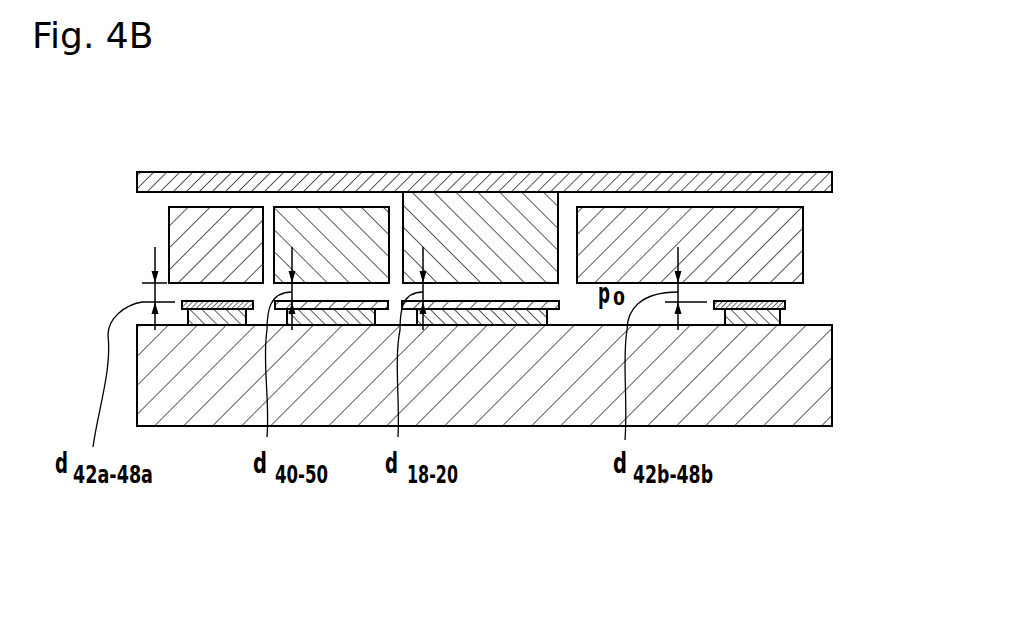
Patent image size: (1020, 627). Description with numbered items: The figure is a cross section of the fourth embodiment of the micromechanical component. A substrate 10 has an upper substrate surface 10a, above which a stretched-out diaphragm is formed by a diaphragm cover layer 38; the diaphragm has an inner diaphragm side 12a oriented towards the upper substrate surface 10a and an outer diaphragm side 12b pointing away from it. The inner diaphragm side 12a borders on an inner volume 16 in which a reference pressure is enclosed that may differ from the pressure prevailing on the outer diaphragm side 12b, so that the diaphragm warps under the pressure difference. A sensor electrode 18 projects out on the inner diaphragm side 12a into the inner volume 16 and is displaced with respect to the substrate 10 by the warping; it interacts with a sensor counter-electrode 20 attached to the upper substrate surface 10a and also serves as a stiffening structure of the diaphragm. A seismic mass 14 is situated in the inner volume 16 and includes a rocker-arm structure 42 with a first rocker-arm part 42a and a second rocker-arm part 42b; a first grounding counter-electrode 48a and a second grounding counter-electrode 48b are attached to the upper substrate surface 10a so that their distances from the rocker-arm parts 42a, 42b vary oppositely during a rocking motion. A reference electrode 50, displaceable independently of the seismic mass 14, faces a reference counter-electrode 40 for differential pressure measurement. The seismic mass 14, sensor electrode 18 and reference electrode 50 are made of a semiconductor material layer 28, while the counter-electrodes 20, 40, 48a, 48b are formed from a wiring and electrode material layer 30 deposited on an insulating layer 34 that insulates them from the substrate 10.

The substrate 10 is at (800, 382).
The upper substrate surface 10a is at (606, 311).
The inner diaphragm side 12a is at (808, 204).
The outer diaphragm side 12b is at (755, 166).
The seismic mass 14 is at (743, 240).
The inner volume 16 is at (568, 218).
The sensor electrode 18 is at (480, 217).
The sensor counter-electrode 20 is at (503, 305).
The semiconductor material layer 28 is at (105, 208).
The wiring and electrode material layer 30 is at (104, 298).
The insulating layer 34 is at (350, 312).
The diaphragm cover layer 38 is at (104, 172).
The reference counter-electrode 40 is at (353, 305).
The rocker-arm structure 42 is at (743, 240).
The first rocker-arm part 42a is at (212, 220).
The second rocker-arm part 42b is at (795, 270).
The first grounding counter-electrode 48a is at (197, 310).
The second grounding counter-electrode 48b is at (790, 300).
The reference electrode 50 is at (297, 227).